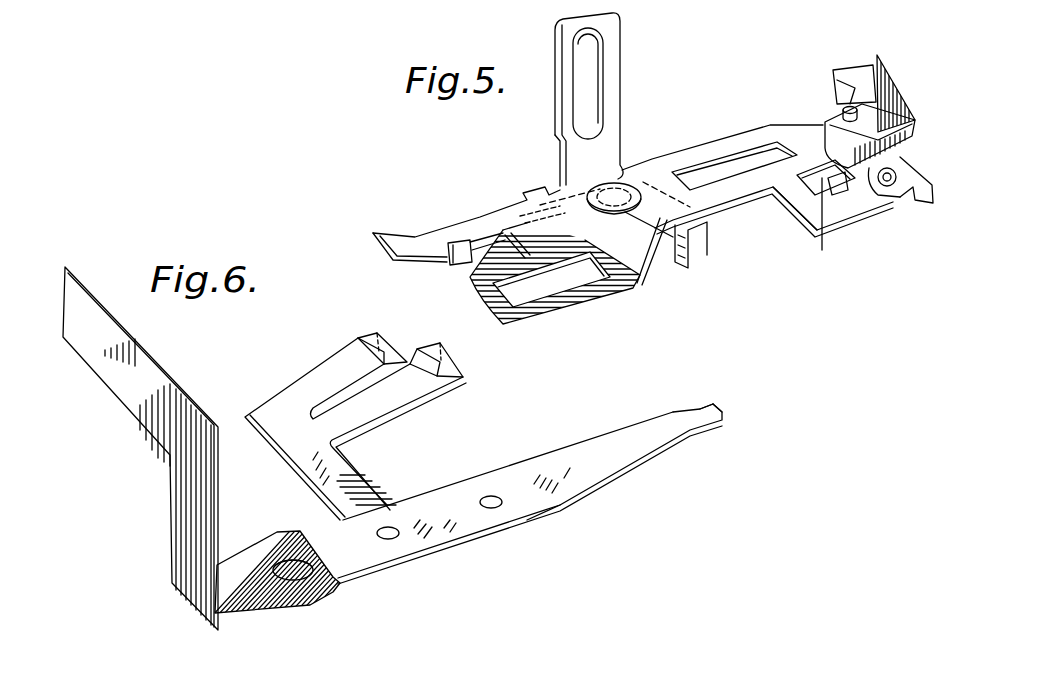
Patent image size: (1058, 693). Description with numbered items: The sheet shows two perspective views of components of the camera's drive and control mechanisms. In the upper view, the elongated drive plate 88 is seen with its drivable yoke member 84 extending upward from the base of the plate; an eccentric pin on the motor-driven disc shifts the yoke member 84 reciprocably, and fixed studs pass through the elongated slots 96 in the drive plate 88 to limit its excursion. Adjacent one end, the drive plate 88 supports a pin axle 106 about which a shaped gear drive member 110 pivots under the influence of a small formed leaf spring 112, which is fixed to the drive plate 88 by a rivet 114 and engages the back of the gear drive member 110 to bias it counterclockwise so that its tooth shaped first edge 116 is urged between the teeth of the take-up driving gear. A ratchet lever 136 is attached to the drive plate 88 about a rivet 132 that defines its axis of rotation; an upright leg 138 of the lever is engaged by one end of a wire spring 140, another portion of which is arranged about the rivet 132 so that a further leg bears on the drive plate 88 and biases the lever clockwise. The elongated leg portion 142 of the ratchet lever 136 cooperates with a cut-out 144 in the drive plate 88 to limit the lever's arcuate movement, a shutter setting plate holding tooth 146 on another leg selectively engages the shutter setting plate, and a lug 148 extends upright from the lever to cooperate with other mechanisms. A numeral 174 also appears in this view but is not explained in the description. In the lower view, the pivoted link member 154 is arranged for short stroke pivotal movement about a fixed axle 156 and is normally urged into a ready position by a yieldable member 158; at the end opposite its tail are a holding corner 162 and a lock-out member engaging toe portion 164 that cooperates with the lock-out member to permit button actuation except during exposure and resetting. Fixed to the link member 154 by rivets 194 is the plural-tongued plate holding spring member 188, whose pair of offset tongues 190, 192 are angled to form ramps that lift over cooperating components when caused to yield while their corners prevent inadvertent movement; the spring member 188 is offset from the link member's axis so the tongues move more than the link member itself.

In FIG. 5, the yoke member 84 is at (628, 65).
In FIG. 5, the drive plate 88 is at (722, 131).
In FIG. 5, the elongated slots 96 is at (690, 172).
In FIG. 5, the pin axle 106 is at (838, 108).
In FIG. 5, the gear drive member 110 is at (853, 62).
In FIG. 5, the leaf spring 112 is at (895, 110).
In FIG. 5, the rivet 114 is at (887, 186).
In FIG. 5, the tooth shaped first edge 116 is at (833, 90).
In FIG. 5, the rivet 132 is at (597, 193).
In FIG. 5, the ratchet lever 136 is at (496, 206).
In FIG. 5, the upright leg 138 is at (712, 237).
In FIG. 5, the wire spring 140 is at (643, 265).
In FIG. 5, the elongated leg portion 142 is at (760, 215).
In FIG. 5, the cut-out 144 is at (822, 250).
In FIG. 5, the shutter setting plate holding tooth 146 is at (387, 238).
In FIG. 5, the lug 148 is at (458, 250).
In FIG. 5, the terminal 174 is at (752, 3).
In FIG. 6, the link member 154 is at (623, 483).
In FIG. 6, the fixed axle 156 is at (285, 560).
In FIG. 6, the yieldable member 158 is at (128, 332).
In FIG. 6, the holding corner 162 is at (700, 410).
In FIG. 6, the toe portion 164 is at (713, 404).
In FIG. 6, the plate holding spring member 188 is at (362, 467).
In FIG. 6, the offset tongue 190 is at (367, 358).
In FIG. 6, the offset tongue 192 is at (413, 363).
In FIG. 6, the rivets 194 is at (488, 510).